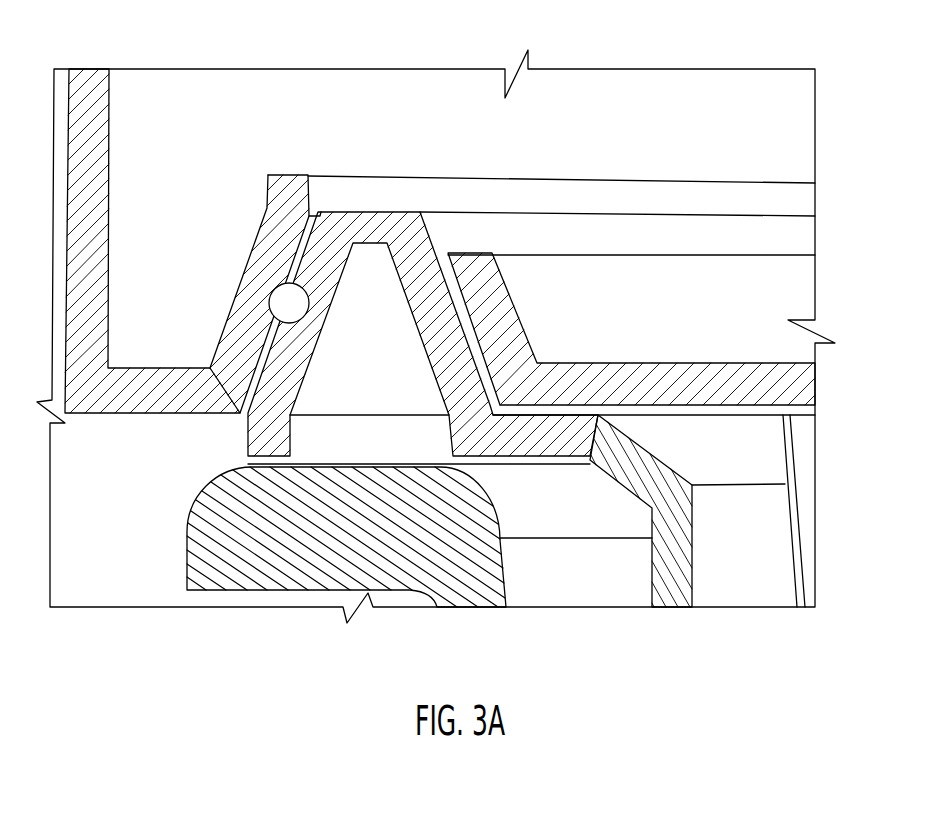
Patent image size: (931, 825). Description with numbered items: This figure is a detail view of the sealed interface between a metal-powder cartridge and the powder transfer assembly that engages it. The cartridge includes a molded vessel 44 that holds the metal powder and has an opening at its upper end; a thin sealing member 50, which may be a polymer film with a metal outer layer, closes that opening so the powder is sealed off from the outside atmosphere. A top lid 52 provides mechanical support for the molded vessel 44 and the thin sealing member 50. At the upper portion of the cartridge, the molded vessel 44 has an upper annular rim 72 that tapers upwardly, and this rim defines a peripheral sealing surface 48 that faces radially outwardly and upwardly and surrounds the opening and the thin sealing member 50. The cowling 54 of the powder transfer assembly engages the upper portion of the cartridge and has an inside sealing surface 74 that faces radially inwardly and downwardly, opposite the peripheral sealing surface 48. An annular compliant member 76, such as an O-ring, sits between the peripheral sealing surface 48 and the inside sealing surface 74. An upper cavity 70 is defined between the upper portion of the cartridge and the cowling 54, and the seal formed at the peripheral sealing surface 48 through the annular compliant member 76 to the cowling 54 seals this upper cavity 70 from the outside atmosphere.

The upper cavity 70 is at (478, 97).
The cowling 54 is at (92, 78).
The peripheral sealing surface 48 is at (310, 233).
The inside sealing surface 74 is at (253, 362).
The upper annular rim 72 is at (380, 230).
The annular compliant member 76 is at (278, 299).
The top lid 52 is at (619, 390).
The molded vessel 44 is at (670, 562).
The thin sealing member 50 is at (758, 418).